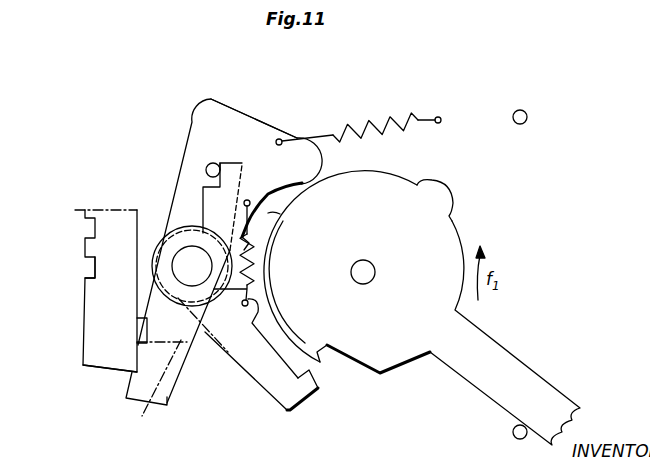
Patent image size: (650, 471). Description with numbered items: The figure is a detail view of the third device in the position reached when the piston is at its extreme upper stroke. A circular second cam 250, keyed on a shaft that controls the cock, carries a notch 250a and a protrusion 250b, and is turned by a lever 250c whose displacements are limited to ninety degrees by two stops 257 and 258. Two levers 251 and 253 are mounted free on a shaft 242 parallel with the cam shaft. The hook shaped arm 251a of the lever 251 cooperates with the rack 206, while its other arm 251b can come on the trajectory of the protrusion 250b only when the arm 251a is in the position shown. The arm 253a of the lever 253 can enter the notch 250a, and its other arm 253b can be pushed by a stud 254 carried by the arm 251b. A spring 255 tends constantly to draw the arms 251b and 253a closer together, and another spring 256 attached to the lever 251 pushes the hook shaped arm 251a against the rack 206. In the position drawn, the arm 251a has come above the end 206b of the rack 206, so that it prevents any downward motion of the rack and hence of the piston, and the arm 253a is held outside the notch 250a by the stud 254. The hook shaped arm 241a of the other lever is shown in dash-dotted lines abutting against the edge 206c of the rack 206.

The rack 206 is at (93, 296).
The end of the rack 206b is at (101, 370).
The edge of the rack 206c is at (138, 272).
The arm of lever 241 241a is at (145, 410).
The shaft 242 is at (200, 247).
The second cam 250 is at (403, 176).
The notch of the cam 250a is at (318, 350).
The protrusion of the cam 250b is at (453, 206).
The lever controlling the cam 250c is at (540, 383).
The lever 251 is at (174, 197).
The hook shaped arm of lever 251 251a is at (167, 397).
The arm of lever 251 251b is at (240, 121).
The lever 253 is at (222, 348).
The arm of lever 253 253a is at (287, 406).
The arm of lever 253 253b is at (233, 163).
The stud 254 is at (206, 166).
The spring 255 is at (268, 214).
The spring 256 is at (378, 122).
The stop 257 is at (523, 110).
The stop 258 is at (513, 436).